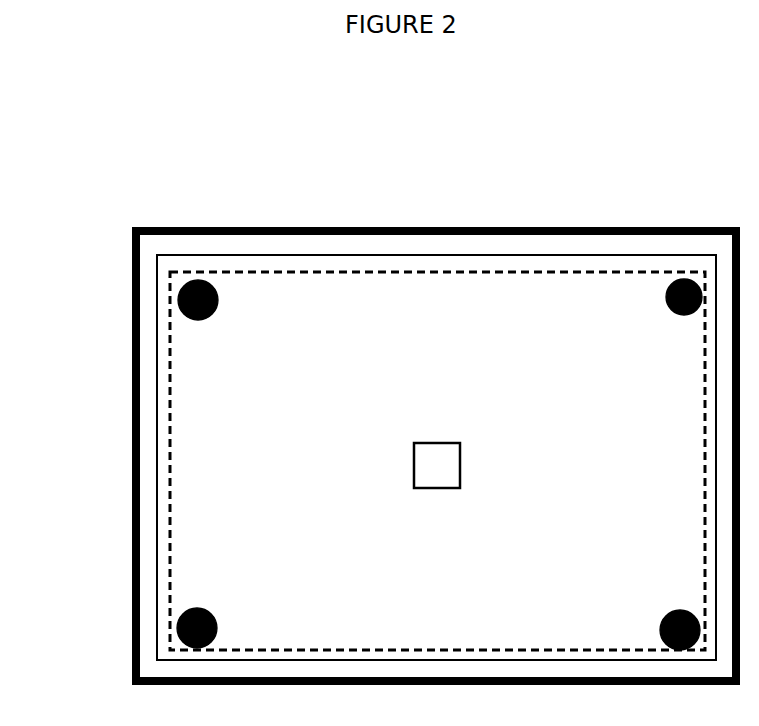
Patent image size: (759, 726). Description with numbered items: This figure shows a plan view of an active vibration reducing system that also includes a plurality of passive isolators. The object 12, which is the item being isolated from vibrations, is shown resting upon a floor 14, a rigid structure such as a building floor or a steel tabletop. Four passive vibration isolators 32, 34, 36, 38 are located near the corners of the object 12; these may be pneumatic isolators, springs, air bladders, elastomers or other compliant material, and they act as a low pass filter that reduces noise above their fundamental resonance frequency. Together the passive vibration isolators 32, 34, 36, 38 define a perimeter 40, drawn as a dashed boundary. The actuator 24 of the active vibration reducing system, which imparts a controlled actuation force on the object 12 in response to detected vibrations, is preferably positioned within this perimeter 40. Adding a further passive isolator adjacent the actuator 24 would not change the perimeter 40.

The floor 14 is at (108, 372).
The object 12 is at (144, 413).
The perimeter 40 is at (190, 464).
The passive vibration isolator 32 is at (236, 314).
The passive vibration isolator 34 is at (658, 320).
The passive vibration isolator 36 is at (649, 609).
The passive vibration isolator 38 is at (230, 609).
The actuator 24 is at (465, 484).